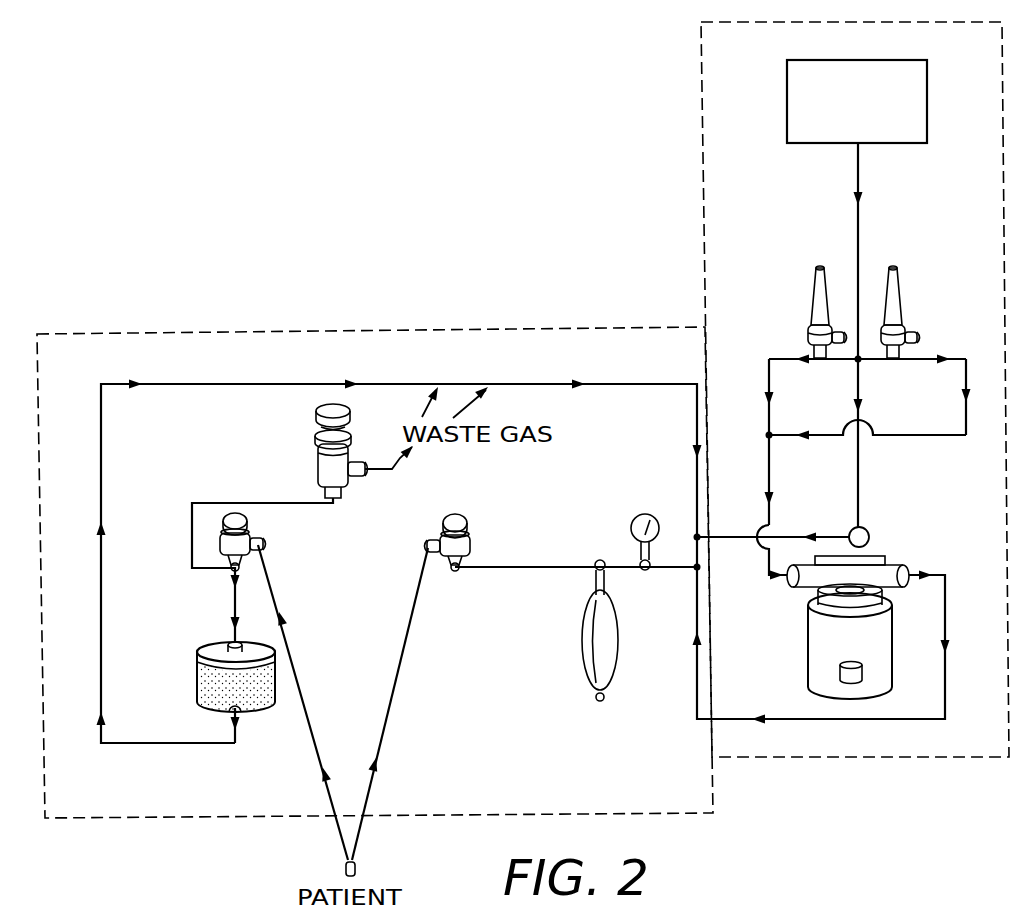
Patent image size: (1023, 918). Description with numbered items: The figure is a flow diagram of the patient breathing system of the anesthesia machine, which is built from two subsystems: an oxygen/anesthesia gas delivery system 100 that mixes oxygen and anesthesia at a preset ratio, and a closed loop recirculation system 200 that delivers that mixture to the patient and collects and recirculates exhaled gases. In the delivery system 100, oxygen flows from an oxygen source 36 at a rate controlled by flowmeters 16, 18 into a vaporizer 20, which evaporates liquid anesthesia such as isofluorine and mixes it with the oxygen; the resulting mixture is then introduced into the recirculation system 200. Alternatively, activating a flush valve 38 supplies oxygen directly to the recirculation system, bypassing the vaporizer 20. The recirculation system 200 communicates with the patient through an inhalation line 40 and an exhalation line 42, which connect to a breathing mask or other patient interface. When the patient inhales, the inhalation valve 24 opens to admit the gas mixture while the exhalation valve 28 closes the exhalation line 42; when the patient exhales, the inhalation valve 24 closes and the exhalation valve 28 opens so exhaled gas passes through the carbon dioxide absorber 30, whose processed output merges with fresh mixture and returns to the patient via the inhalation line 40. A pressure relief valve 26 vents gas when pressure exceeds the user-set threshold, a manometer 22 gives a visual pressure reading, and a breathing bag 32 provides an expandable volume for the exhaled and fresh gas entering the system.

The oxygen/anesthesia gas delivery system 100 is at (700, 93).
The closed loop recirculation system 200 is at (363, 327).
The oxygen source 36 is at (787, 83).
The flowmeter 16 is at (816, 270).
The flowmeter 18 is at (894, 278).
The flush valve 38 is at (851, 528).
The vaporizer 20 is at (808, 648).
The pressure relief valve 26 is at (318, 468).
The exhalation valve 28 is at (236, 513).
The carbon dioxide absorber 30 is at (212, 642).
The inhalation valve 24 is at (468, 518).
The manometer 22 is at (641, 512).
The breathing bag 32 is at (583, 664).
The inhalation line 40 is at (380, 750).
The exhalation line 42 is at (310, 735).